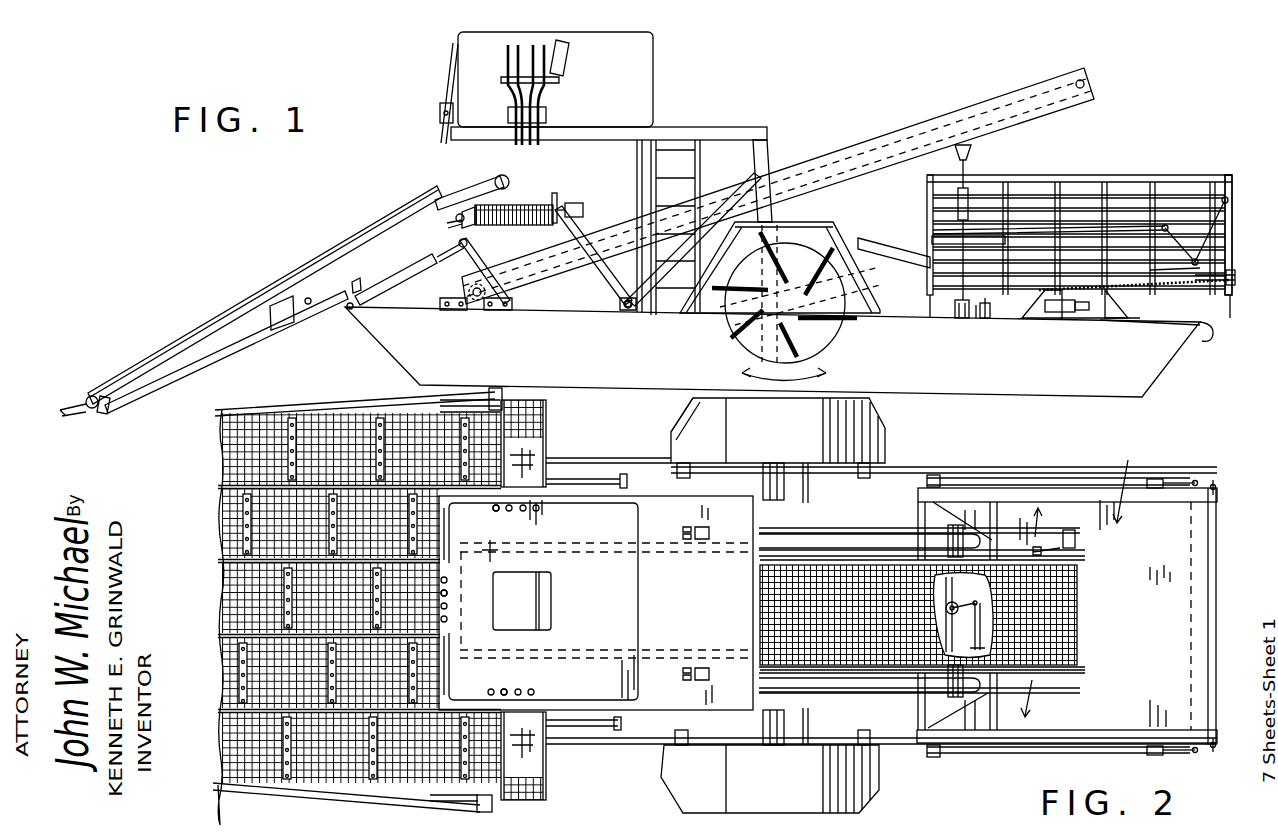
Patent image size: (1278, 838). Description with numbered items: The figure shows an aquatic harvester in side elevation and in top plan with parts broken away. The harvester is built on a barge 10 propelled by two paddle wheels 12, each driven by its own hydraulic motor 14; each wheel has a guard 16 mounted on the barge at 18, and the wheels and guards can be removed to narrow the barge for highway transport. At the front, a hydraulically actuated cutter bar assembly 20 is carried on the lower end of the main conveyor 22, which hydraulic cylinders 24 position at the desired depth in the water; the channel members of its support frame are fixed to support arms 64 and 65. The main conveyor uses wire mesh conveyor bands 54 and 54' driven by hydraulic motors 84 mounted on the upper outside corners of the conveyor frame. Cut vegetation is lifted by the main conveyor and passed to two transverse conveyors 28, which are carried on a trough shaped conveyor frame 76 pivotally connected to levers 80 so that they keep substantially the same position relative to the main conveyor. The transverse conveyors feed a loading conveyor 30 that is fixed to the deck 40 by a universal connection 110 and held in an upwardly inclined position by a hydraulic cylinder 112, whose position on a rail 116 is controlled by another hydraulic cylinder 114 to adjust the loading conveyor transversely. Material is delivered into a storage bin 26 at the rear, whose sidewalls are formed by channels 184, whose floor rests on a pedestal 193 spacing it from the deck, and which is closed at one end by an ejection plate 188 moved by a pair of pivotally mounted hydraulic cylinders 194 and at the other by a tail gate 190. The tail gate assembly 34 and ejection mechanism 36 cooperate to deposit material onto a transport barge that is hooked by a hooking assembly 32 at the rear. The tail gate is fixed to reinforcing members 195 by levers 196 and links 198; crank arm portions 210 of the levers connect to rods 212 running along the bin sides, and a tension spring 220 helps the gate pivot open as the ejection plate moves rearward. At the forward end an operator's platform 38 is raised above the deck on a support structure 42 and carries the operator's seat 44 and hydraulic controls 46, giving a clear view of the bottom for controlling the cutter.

In FIG. 1, the barge 10 is at (1016, 385).
In FIG. 2, the barge 10 is at (1048, 465).
In FIG. 1, the paddle wheels 12 is at (824, 336).
In FIG. 2, the paddle wheels 12 is at (896, 427).
In FIG. 2, the hydraulic motors 14 is at (777, 468).
In FIG. 1, the guards 16 is at (872, 234).
In FIG. 2, the guards 16 is at (694, 407).
In FIG. 2, the guard mountings 18 is at (690, 471).
In FIG. 1, the cutter bar assembly 20 is at (60, 398).
In FIG. 1, the main conveyor 22 is at (155, 349).
In FIG. 2, the main conveyor 22 is at (209, 474).
In FIG. 1, the hydraulic cylinders 24 is at (397, 293).
In FIG. 1, the storage bin 26 is at (1113, 163).
In FIG. 2, the storage bin 26 is at (1067, 586).
In FIG. 1, the transverse conveyors 28 is at (543, 198).
In FIG. 2, the transverse conveyors 28 is at (541, 433).
In FIG. 1, the loading conveyor 30 is at (868, 132).
In FIG. 2, the loading conveyor 30 is at (1075, 608).
In FIG. 1, the hooking assembly 32 is at (1100, 334).
In FIG. 1, the tail gate assembly 34 is at (1240, 172).
In FIG. 1, the ejection mechanism 36 is at (897, 244).
In FIG. 2, the ejection mechanism 36 is at (898, 522).
In FIG. 1, the operator's platform 38 is at (622, 127).
In FIG. 2, the operator's platform 38 is at (606, 623).
In FIG. 1, the deck 40 is at (600, 300).
In FIG. 2, the deck 40 is at (664, 468).
In FIG. 1, the support structure 42 is at (780, 150).
In FIG. 1, the operator's seat 44 is at (572, 57).
In FIG. 2, the operator's seat 44 is at (529, 623).
In FIG. 1, the hydraulic controls 46 is at (447, 75).
In FIG. 2, the hydraulic controls 46 is at (536, 522).
In FIG. 2, the conveyor bands 54 is at (300, 598).
In FIG. 2, the conveyor band 54' is at (332, 576).
In FIG. 1, the support arm 64 is at (441, 296).
In FIG. 1, the support arm 65 is at (478, 253).
In FIG. 1, the conveyor frame 76 is at (548, 225).
In FIG. 1, the levers 80 is at (583, 241).
In FIG. 2, the levers 80 is at (602, 478).
In FIG. 1, the hydraulic motors 84 is at (501, 176).
In FIG. 2, the hydraulic motors 84 is at (497, 392).
In FIG. 1, the universal connection 110 is at (483, 306).
In FIG. 1, the hydraulic cylinder 112 is at (958, 201).
In FIG. 2, the hydraulic cylinder 112 is at (957, 604).
In FIG. 1, the hydraulic cylinder 114 is at (992, 317).
In FIG. 2, the hydraulic cylinder 114 is at (972, 720).
In FIG. 1, the rail 116 is at (960, 313).
In FIG. 2, the rail 116 is at (950, 691).
In FIG. 1, the channels 184 is at (1073, 186).
In FIG. 2, the ejection plate 188 is at (990, 699).
In FIG. 1, the tail gate 190 is at (1232, 182).
In FIG. 2, the tail gate 190 is at (1216, 537).
In FIG. 1, the pedestal 193 is at (1025, 320).
In FIG. 1, the hydraulic cylinders 194 is at (914, 257).
In FIG. 2, the hydraulic cylinders 194 is at (838, 531).
In FIG. 1, the reinforcing members 195 is at (1175, 265).
In FIG. 1, the levers 196 is at (1187, 240).
In FIG. 2, the levers 196 is at (1203, 486).
In FIG. 1, the links 198 is at (1218, 278).
In FIG. 1, the crank arm portions 210 is at (1195, 228).
In FIG. 2, the crank arm portions 210 is at (1172, 469).
In FIG. 1, the rods 212 is at (1094, 235).
In FIG. 2, the rods 212 is at (1096, 480).
In FIG. 1, the tension spring 220 is at (1142, 273).